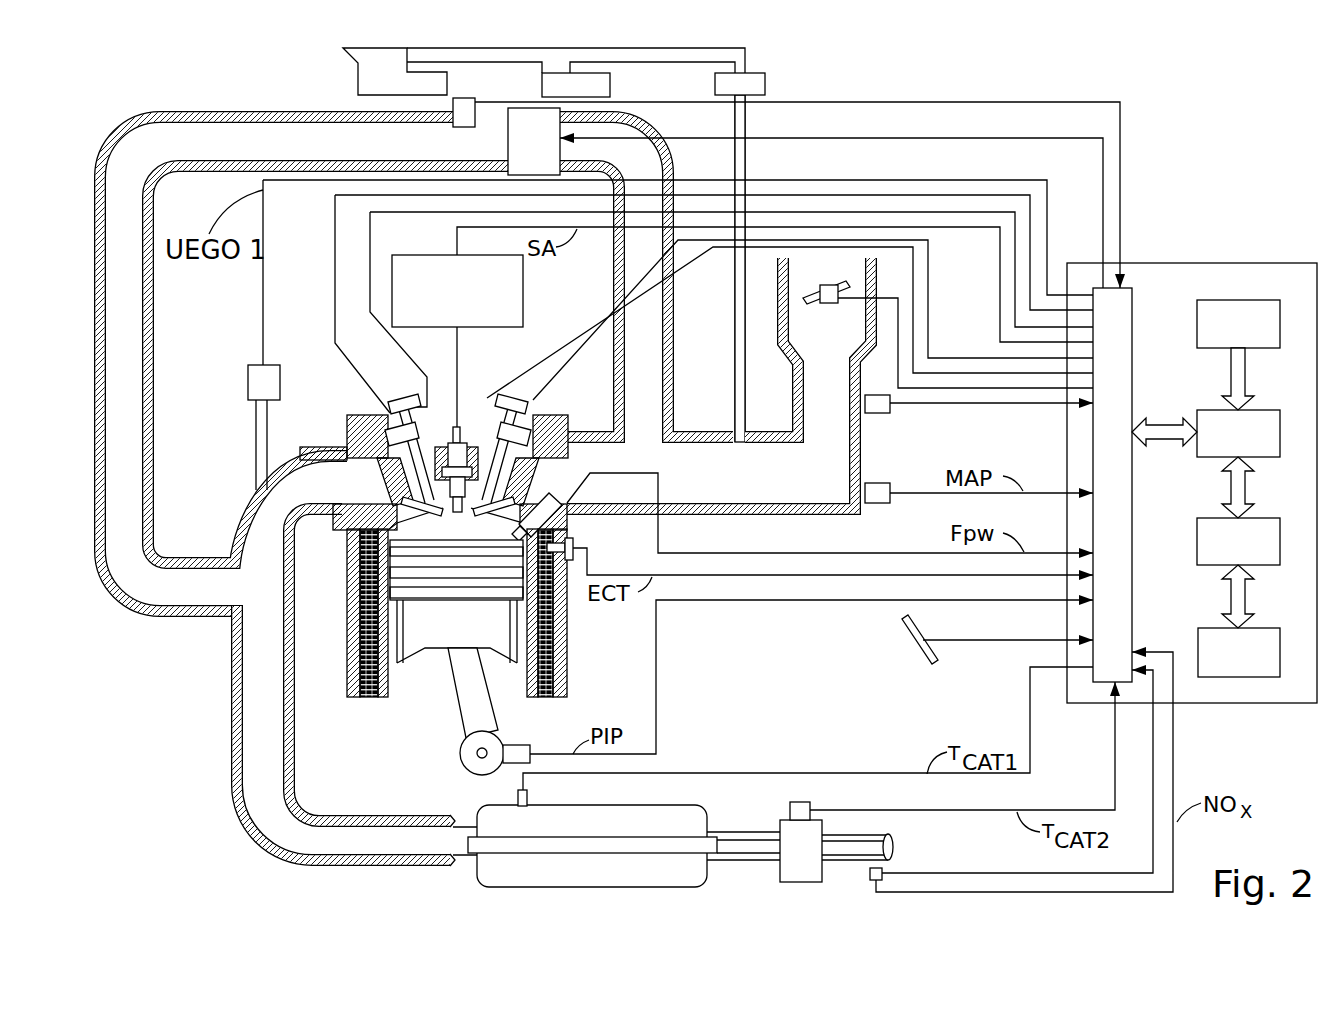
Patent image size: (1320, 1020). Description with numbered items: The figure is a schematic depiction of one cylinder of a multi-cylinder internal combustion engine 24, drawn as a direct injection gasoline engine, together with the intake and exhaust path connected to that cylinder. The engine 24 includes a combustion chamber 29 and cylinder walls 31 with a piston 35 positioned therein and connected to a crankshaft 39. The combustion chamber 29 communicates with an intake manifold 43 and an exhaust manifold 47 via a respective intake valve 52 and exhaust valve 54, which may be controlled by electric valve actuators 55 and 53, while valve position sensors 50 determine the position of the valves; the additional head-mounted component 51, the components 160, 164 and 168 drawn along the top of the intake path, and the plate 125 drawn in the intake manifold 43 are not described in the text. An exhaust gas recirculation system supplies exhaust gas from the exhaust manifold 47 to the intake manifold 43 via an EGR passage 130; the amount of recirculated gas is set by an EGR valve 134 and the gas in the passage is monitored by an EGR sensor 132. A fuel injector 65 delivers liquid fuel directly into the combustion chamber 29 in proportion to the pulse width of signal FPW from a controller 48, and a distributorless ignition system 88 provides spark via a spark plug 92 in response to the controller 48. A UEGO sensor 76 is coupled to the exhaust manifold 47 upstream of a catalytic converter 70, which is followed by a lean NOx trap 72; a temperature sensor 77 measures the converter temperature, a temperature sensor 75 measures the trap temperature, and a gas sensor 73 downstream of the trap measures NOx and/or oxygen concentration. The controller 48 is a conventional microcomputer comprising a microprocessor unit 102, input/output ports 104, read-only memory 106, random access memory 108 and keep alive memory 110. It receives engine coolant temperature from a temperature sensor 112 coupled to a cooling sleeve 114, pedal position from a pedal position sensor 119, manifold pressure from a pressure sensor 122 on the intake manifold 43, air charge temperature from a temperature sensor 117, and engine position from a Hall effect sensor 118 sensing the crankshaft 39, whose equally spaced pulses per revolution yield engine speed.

The EGR passage 130 is at (257, 128).
The air intake device 160 is at (447, 80).
The intake component 164 is at (610, 86).
The intake sensor 168 is at (765, 86).
The EGR sensor 132 is at (453, 124).
The EGR valve 134 is at (554, 153).
The distributorless ignition system 88 is at (441, 255).
The Universal Exhaust Gas Oxygen (UEGO) sensor 76 is at (272, 366).
The internal combustion engine 24 is at (352, 410).
The electric valve actuator 53 is at (400, 400).
The valve position sensor 50 is at (412, 402).
The spark plug 92 is at (447, 420).
The intake valve 51 is at (472, 410).
The electric valve actuator 55 is at (540, 412).
The exhaust valve 54 is at (397, 497).
The intake valve 52 is at (505, 497).
The fuel injector 65 is at (558, 501).
The temperature sensor 112 is at (576, 542).
The exhaust manifold 47 is at (258, 518).
The combustion chamber 29 is at (443, 527).
The cooling sleeve 114 is at (365, 704).
The cylinder walls 31 is at (392, 704).
The piston 35 is at (460, 630).
The crankshaft 39 is at (470, 758).
The Hall effect sensor 118 is at (514, 745).
The temperature sensor 77 is at (527, 798).
The catalytic converter 70 is at (633, 806).
The temperature sensor 75 is at (812, 808).
The lean NOx trap 72 is at (780, 881).
The gas sensor 73 is at (870, 876).
The throttle plate 125 is at (856, 287).
The temperature sensor 117 is at (896, 420).
The pressure sensor 122 is at (892, 505).
The intake manifold 43 is at (773, 487).
The controller 48 is at (1268, 264).
The input/output ports 104 is at (1132, 336).
The read-only memory 106 is at (1257, 300).
The microprocessor unit 102 is at (1258, 410).
The random access memory 108 is at (1258, 518).
The keep alive memory 110 is at (1256, 628).
The pedal position sensor 119 is at (908, 655).